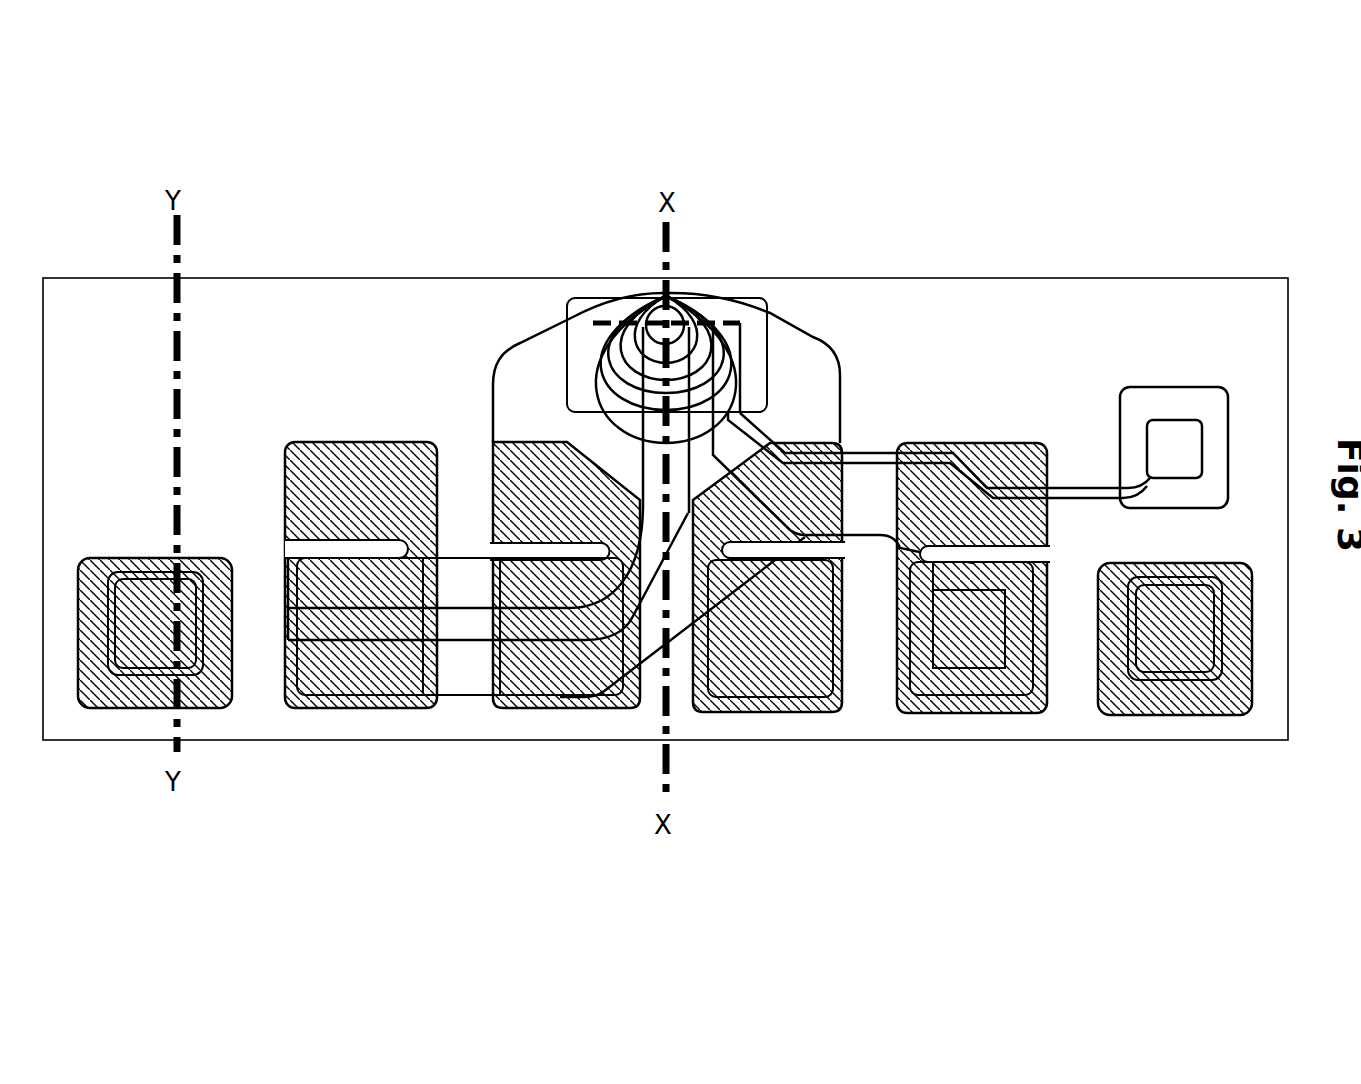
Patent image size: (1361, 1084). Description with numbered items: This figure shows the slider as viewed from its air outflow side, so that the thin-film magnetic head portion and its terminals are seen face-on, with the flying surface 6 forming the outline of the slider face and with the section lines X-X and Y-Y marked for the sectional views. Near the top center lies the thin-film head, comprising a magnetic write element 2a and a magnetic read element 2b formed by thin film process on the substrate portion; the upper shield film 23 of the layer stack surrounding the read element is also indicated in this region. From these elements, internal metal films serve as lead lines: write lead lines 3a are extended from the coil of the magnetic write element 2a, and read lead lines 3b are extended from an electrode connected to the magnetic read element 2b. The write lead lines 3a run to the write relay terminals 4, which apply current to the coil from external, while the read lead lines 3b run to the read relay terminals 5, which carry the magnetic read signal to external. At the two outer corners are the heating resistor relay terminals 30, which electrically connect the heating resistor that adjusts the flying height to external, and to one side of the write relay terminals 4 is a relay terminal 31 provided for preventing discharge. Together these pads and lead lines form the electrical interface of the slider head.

The magnetic write element 2a is at (697, 290).
The magnetic read element 2b is at (633, 290).
The write lead lines 3a is at (1073, 470).
The read lead lines 3b is at (462, 667).
The write relay terminals 4 is at (813, 706).
The read relay terminals 5 is at (390, 706).
The flying surface 6 is at (303, 265).
The upper shield film 23 is at (575, 280).
The heating resistor relay terminals 30 is at (210, 688).
The relay terminal for preventing discharge 31 is at (1170, 427).